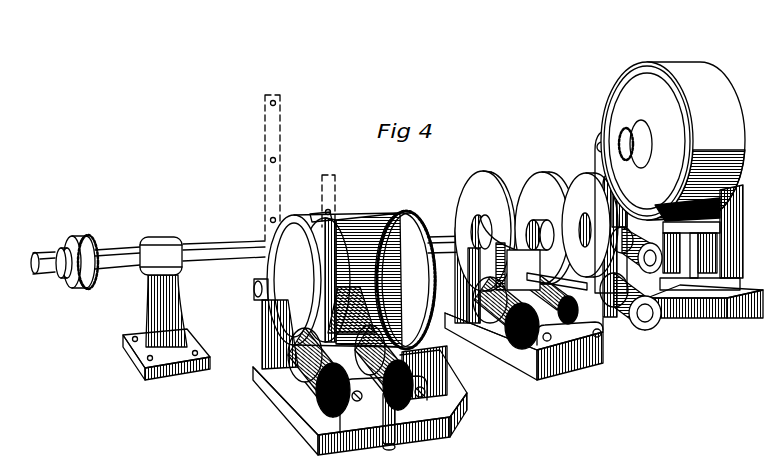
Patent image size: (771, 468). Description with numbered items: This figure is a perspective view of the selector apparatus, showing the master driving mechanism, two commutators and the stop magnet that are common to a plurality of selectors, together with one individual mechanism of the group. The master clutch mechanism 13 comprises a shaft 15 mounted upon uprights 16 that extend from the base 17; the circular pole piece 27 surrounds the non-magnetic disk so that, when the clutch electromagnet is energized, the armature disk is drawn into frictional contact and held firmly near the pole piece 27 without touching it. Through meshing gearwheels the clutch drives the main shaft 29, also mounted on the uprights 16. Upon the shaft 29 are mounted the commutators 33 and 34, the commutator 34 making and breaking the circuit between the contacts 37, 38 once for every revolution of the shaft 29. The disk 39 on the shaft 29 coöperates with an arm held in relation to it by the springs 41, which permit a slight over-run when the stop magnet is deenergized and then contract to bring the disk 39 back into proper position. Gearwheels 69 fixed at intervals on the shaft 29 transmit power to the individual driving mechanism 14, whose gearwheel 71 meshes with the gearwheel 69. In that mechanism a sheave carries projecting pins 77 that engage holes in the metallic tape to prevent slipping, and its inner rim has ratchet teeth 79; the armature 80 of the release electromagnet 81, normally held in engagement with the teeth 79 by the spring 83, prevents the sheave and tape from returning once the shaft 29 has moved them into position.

The master clutch mechanism 13 is at (673, 130).
The individual driving mechanism 14 is at (184, 308).
The shaft 15 is at (598, 145).
The uprights 16 is at (597, 133).
The base 17 is at (725, 305).
The circular pole piece 27 is at (728, 100).
The shaft 29 is at (445, 236).
The commutator 33 is at (547, 175).
The commutator 34 is at (588, 175).
The contact 37 is at (658, 303).
The contact 38 is at (640, 322).
The disk 39 is at (470, 175).
The springs 41 is at (497, 263).
The gearwheels 69 is at (89, 250).
The gearwheel 71 is at (418, 222).
The projecting pins 77 is at (304, 222).
The teeth 79 is at (318, 213).
The armature 80 is at (360, 367).
The electromagnet 81 is at (318, 387).
The spring 83 is at (385, 440).